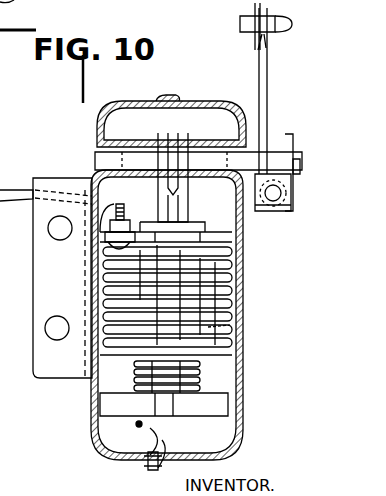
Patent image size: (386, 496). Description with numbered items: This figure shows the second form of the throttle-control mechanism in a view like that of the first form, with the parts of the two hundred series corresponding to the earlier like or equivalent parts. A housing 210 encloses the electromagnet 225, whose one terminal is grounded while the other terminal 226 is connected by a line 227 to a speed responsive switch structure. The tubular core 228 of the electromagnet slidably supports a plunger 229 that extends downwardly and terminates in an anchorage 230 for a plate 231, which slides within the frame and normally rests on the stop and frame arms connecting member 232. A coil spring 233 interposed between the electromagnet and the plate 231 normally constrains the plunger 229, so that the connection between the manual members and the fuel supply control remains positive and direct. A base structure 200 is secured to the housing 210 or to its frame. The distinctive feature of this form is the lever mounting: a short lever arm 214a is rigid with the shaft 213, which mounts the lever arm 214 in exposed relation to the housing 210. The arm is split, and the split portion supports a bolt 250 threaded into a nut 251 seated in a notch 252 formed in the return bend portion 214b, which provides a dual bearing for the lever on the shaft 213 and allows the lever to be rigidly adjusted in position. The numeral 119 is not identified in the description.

The cut-off numeral 119 is at (127, 6).
The base structure 200 is at (52, 178).
The housing 210 is at (193, 101).
The shaft 213 is at (248, 122).
The lever arm 214 is at (268, 88).
The short lever arm 214a is at (186, 190).
The return bend portion 214b is at (303, 139).
The electromagnet 225 is at (243, 300).
The terminal 226 is at (128, 220).
The line 227 is at (14, 190).
The tubular core 228 is at (242, 338).
The plunger 229 is at (242, 283).
The anchorage 230 is at (156, 470).
The plate 231 is at (198, 410).
The stop and frame arms connecting member 232 is at (137, 427).
The coil spring 233 is at (206, 379).
The bolt 250 is at (273, 195).
The nut 251 is at (285, 210).
The notch 252 is at (281, 164).